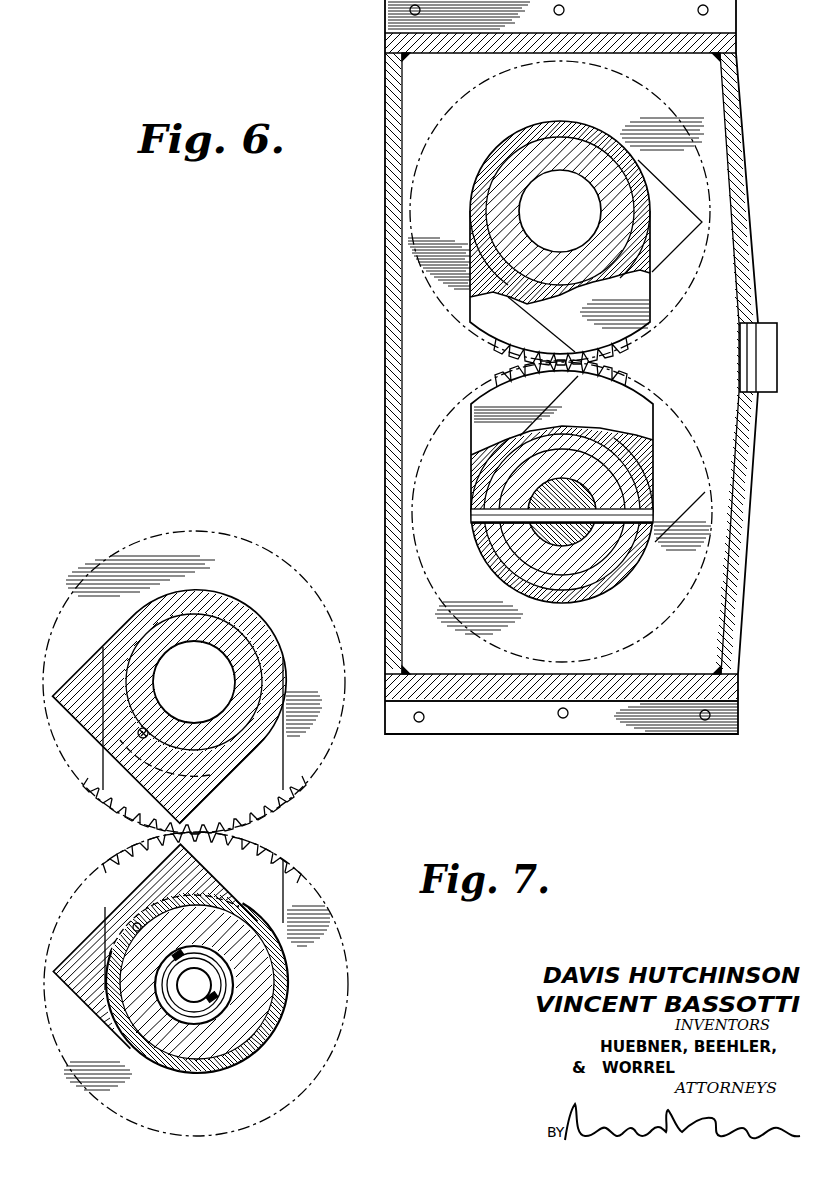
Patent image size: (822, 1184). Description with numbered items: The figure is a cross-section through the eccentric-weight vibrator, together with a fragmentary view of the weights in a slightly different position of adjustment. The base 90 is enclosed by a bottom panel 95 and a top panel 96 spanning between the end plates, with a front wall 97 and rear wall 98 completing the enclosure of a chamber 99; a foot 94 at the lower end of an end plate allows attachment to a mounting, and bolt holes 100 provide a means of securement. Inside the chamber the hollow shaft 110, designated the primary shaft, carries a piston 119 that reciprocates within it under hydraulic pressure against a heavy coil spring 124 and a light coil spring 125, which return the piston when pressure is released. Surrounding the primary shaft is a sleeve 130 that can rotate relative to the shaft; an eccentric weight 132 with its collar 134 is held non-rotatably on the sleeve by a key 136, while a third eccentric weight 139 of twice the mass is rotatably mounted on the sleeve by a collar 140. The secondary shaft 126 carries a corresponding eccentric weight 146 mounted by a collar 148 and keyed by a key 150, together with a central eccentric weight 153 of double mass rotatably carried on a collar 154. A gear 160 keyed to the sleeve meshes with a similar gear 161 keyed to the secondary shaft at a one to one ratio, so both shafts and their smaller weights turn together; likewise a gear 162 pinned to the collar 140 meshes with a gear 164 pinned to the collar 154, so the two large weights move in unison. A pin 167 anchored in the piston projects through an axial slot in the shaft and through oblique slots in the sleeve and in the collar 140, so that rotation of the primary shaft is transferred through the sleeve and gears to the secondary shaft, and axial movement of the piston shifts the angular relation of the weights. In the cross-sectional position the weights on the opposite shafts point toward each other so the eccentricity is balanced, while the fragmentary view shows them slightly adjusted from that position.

In FIG. 6, the base 90 is at (381, 238).
In FIG. 6, the foot 94 is at (570, 729).
In FIG. 6, the bottom panel 95 is at (657, 694).
In FIG. 6, the top panel 96 is at (724, 42).
In FIG. 6, the front wall 97 is at (397, 383).
In FIG. 6, the rear wall 98 is at (750, 518).
In FIG. 6, the chamber 99 is at (707, 293).
In FIG. 6, the bolt holes 100 is at (410, 11).
In FIG. 6, the hollow shaft 110 is at (603, 555).
In FIG. 7, the hollow shaft 110 is at (147, 1008).
In FIG. 6, the piston 119 is at (560, 556).
In FIG. 7, the piston 119 is at (193, 992).
In FIG. 7, the heavy coil spring 124 is at (218, 1007).
In FIG. 7, the light coil spring 125 is at (212, 985).
In FIG. 6, the secondary shaft 126 is at (500, 181).
In FIG. 7, the secondary shaft 126 is at (222, 633).
In FIG. 6, the sleeve 130 is at (497, 550).
In FIG. 7, the sleeve 130 is at (250, 1038).
In FIG. 7, the eccentric weight 132 is at (134, 880).
In FIG. 7, the collar 134 is at (250, 1064).
In FIG. 7, the key 136 is at (136, 924).
In FIG. 6, the third eccentric weight 139 is at (480, 434).
In FIG. 6, the collar 140 is at (590, 600).
In FIG. 7, the eccentric weight 146 is at (91, 767).
In FIG. 7, the collar 148 is at (271, 634).
In FIG. 7, the key 150 is at (144, 730).
In FIG. 6, the central eccentric weight 153 is at (470, 326).
In FIG. 6, the collar 154 is at (560, 123).
In FIG. 6, the gear 160 is at (490, 379).
In FIG. 6, the gear 161 is at (622, 346).
In FIG. 7, the gear 162 is at (265, 854).
In FIG. 7, the gear 164 is at (307, 778).
In FIG. 6, the pin 167 is at (650, 515).